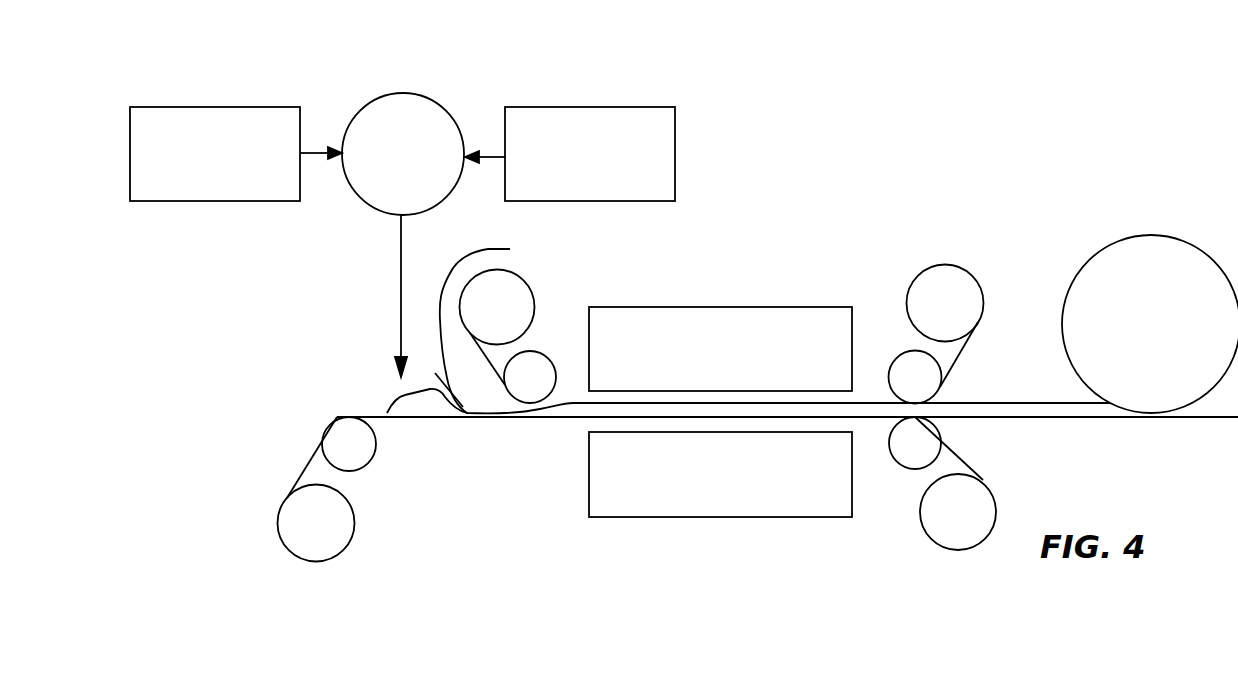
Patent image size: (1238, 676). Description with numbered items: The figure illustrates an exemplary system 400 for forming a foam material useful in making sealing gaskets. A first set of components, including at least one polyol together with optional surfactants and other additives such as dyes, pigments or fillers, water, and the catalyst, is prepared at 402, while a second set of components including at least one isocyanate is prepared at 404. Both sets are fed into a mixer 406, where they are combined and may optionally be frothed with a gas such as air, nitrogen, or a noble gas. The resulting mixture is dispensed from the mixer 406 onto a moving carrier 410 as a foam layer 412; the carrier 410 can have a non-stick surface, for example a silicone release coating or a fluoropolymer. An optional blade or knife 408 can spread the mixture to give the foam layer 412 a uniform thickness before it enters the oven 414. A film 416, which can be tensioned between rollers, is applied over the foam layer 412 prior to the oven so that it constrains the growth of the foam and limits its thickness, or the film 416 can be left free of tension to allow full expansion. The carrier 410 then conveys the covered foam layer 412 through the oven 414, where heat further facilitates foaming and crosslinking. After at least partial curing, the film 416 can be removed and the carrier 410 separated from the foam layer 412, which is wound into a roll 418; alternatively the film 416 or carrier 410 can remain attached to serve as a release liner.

The printing system 400 is at (878, 165).
The first set of components 402 is at (203, 107).
The second set of components 404 is at (622, 107).
The mixer 406 is at (400, 93).
The blade or knife 408 is at (506, 327).
The carrier 410 is at (307, 455).
The foam layer 412 is at (427, 403).
The oven 414 is at (680, 307).
The film 416 is at (490, 370).
The roll 418 is at (1093, 255).